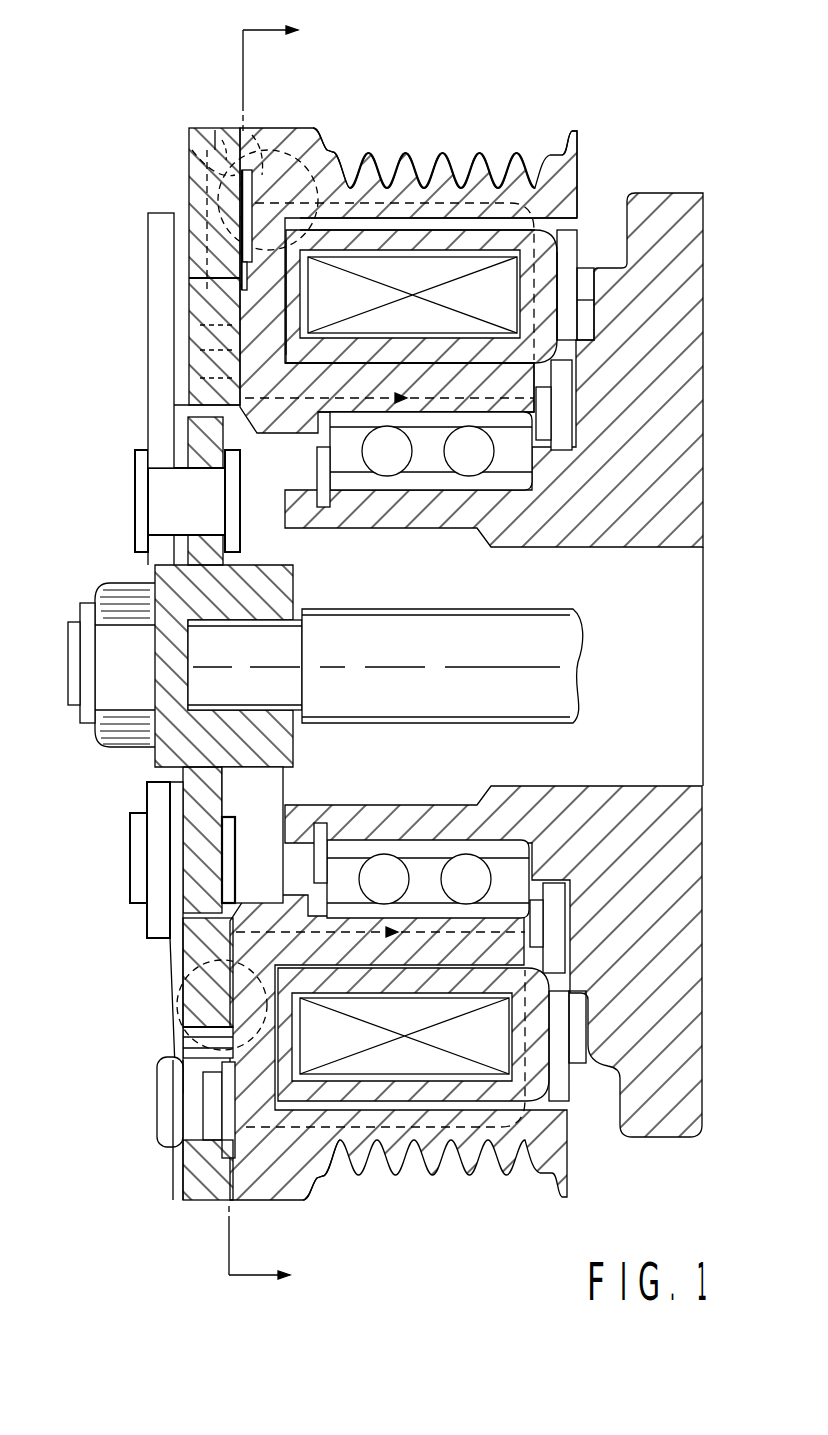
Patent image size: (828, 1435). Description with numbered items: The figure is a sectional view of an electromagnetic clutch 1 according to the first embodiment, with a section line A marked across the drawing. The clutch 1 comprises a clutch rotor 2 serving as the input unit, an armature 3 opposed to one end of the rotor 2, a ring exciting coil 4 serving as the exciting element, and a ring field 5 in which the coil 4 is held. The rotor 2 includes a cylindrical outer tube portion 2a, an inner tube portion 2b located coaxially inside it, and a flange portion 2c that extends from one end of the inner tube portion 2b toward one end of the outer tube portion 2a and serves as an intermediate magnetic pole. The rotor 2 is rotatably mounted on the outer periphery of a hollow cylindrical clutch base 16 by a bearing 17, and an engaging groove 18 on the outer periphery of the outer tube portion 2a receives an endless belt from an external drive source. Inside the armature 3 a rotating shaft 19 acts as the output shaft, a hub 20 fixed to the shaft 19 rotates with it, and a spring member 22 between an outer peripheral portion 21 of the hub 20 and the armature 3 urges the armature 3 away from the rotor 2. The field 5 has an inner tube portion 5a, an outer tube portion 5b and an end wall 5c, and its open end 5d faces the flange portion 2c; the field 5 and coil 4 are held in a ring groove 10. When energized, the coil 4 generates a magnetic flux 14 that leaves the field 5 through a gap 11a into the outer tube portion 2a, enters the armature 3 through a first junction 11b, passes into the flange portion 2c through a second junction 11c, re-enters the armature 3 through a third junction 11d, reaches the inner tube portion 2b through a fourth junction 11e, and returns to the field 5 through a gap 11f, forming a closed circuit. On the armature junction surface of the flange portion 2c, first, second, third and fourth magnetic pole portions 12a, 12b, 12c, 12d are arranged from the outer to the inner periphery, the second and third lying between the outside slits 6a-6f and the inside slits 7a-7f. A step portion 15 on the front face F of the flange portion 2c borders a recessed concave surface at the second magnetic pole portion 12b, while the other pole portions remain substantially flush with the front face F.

The electromagnetic clutch 1 is at (506, 62).
The clutch rotor 2 is at (294, 116).
The outer tube portion 2a is at (582, 160).
The inner tube portion 2b is at (553, 398).
The flange portion 2c is at (330, 290).
The armature 3 is at (176, 148).
The ring exciting coil 4 is at (437, 272).
The ring field 5 is at (565, 248).
The inner tube portion 5a is at (385, 238).
The outer tube portion 5b is at (437, 350).
The end wall 5c is at (578, 290).
The open end 5d is at (292, 292).
The outside slits 6a-6f is at (252, 130).
The inside slits 7a-7f is at (202, 430).
The ring groove 10 is at (583, 308).
The gap 11a is at (580, 223).
The first junction 11b is at (228, 148).
The second junction 11c is at (236, 246).
The third junction 11d is at (217, 332).
The fourth junction 11e is at (236, 400).
The gap 11f is at (562, 372).
The first magnetic pole portion 12a is at (215, 140).
The second magnetic pole portion 12b is at (236, 270).
The third magnetic pole portion 12c is at (217, 354).
The fourth magnetic pole portion 12d is at (217, 382).
The magnetic flux 14 is at (291, 181).
The step portion 15 is at (236, 291).
The clutch base 16 is at (703, 910).
The bearing 17 is at (508, 853).
The engaging groove 18 is at (520, 185).
The rotating shaft 19 is at (582, 627).
The hub 20 is at (152, 605).
The outer peripheral portion 21 is at (172, 858).
The spring member 22 is at (172, 997).
The section line A- A is at (263, 657).
The front face F is at (230, 216).